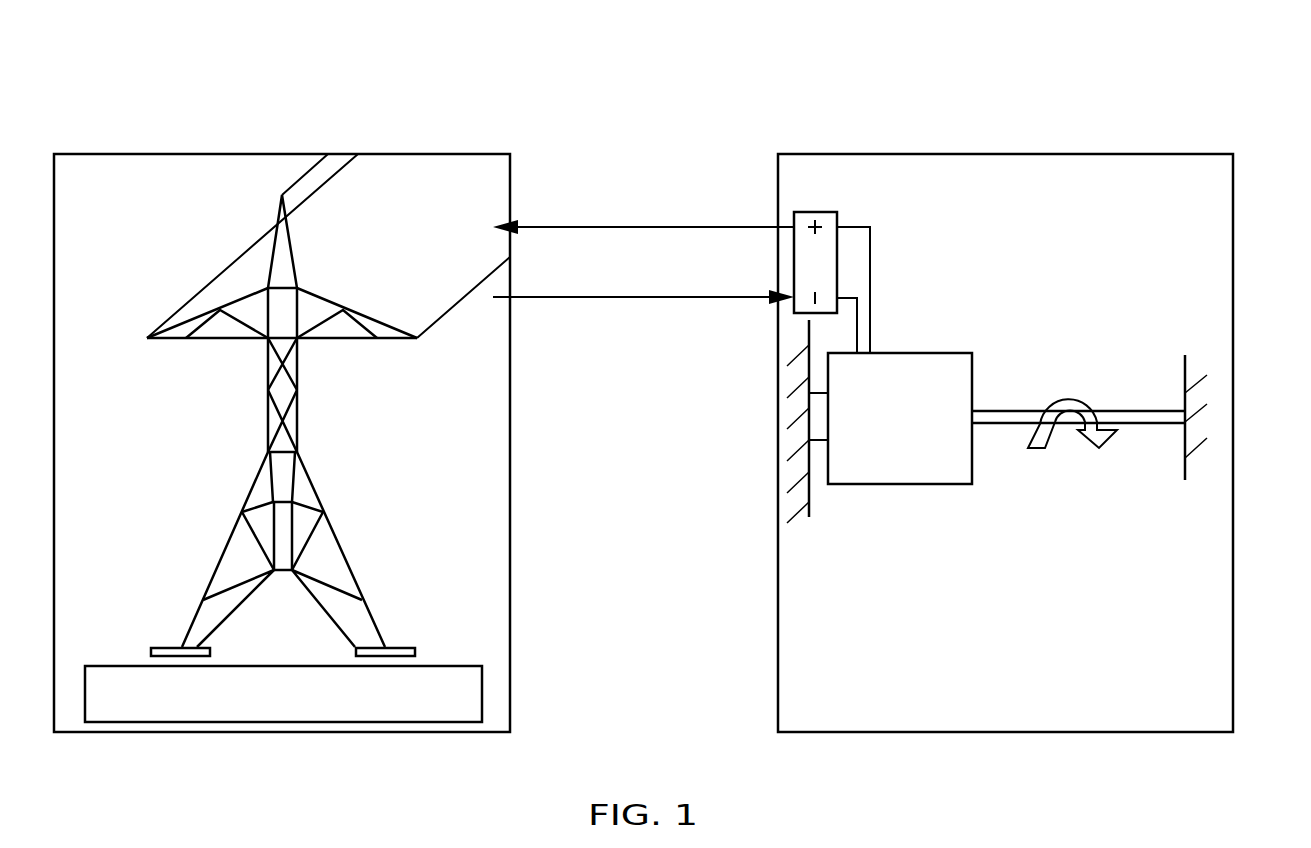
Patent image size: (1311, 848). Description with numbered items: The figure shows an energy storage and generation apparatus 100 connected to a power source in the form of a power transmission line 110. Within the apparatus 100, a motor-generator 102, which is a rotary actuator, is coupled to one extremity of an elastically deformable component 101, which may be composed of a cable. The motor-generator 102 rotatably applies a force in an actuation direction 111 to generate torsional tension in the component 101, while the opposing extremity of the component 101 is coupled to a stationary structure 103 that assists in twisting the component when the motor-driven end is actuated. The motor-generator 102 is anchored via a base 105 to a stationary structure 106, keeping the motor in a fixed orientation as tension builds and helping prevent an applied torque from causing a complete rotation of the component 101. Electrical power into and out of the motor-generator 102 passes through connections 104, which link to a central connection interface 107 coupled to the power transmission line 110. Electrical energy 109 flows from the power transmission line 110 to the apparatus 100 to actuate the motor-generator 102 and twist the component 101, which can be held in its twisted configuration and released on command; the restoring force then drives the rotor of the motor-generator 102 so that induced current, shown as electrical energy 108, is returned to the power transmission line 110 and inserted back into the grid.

The energy storage and generation apparatus 100 is at (1148, 69).
The elastically deformable component 101 is at (1133, 411).
The motor-generator 102 is at (962, 353).
The support wall / bearing 103 is at (1186, 438).
The connections 104 is at (858, 226).
The base 105 is at (815, 429).
The stationary structure 106 is at (809, 502).
The central connection interface 107 is at (823, 212).
The electrical energy 108 is at (632, 226).
The electrical energy 109 is at (592, 299).
The power transmission line 110 is at (463, 154).
The actuation direction 111 is at (1070, 395).